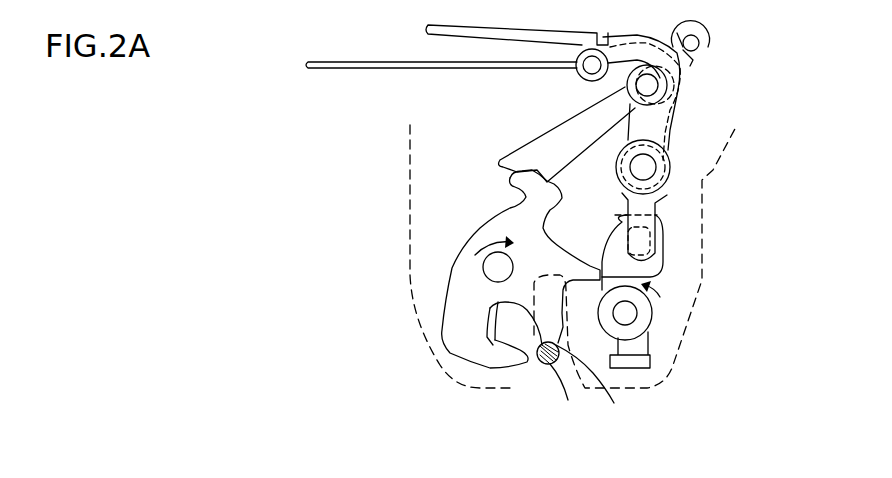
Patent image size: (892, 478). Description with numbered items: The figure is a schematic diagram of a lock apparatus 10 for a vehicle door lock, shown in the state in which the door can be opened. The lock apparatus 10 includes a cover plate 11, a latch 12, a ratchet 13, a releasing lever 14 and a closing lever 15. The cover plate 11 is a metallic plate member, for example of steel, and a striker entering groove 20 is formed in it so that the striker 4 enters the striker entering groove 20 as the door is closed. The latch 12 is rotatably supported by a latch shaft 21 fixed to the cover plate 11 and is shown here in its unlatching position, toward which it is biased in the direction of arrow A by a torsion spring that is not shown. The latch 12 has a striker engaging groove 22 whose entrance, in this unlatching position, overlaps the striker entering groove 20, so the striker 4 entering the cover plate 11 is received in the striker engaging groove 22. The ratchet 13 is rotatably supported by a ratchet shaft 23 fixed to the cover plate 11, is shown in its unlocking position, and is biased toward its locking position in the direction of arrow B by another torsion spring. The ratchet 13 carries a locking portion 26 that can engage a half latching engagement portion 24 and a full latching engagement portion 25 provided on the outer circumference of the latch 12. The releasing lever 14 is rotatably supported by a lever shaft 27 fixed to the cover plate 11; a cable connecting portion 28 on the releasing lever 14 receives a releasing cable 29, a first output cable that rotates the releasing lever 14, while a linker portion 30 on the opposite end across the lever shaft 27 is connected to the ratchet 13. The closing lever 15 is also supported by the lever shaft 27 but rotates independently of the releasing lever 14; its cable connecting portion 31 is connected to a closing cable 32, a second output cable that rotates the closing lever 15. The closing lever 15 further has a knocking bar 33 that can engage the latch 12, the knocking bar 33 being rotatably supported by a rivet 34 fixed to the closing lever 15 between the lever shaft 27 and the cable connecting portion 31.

The lock apparatus 10 is at (834, 53).
The cover plate 11 is at (400, 211).
The latch 12 is at (426, 315).
The ratchet 13 is at (670, 335).
The releasing lever 14 is at (685, 125).
The closing lever 15 is at (613, 125).
The striker entering groove 20 is at (536, 366).
The latch shaft 21 is at (498, 267).
The striker engaging groove 22 is at (493, 340).
The ratchet shaft 23 is at (625, 313).
The half latching engagement portion 24 is at (647, 278).
The full latching engagement portion 25 is at (590, 385).
The locking portion 26 is at (613, 232).
The lever shaft 27 is at (643, 167).
The cable connecting portion 28 is at (584, 53).
The releasing cable 29 is at (308, 63).
The linker portion 30 is at (652, 228).
The cable connecting portion 31 is at (705, 43).
The closing cable 32 is at (432, 27).
The knocking bar 33 is at (545, 142).
The rivet 34 is at (627, 88).
The striker 4 is at (562, 395).